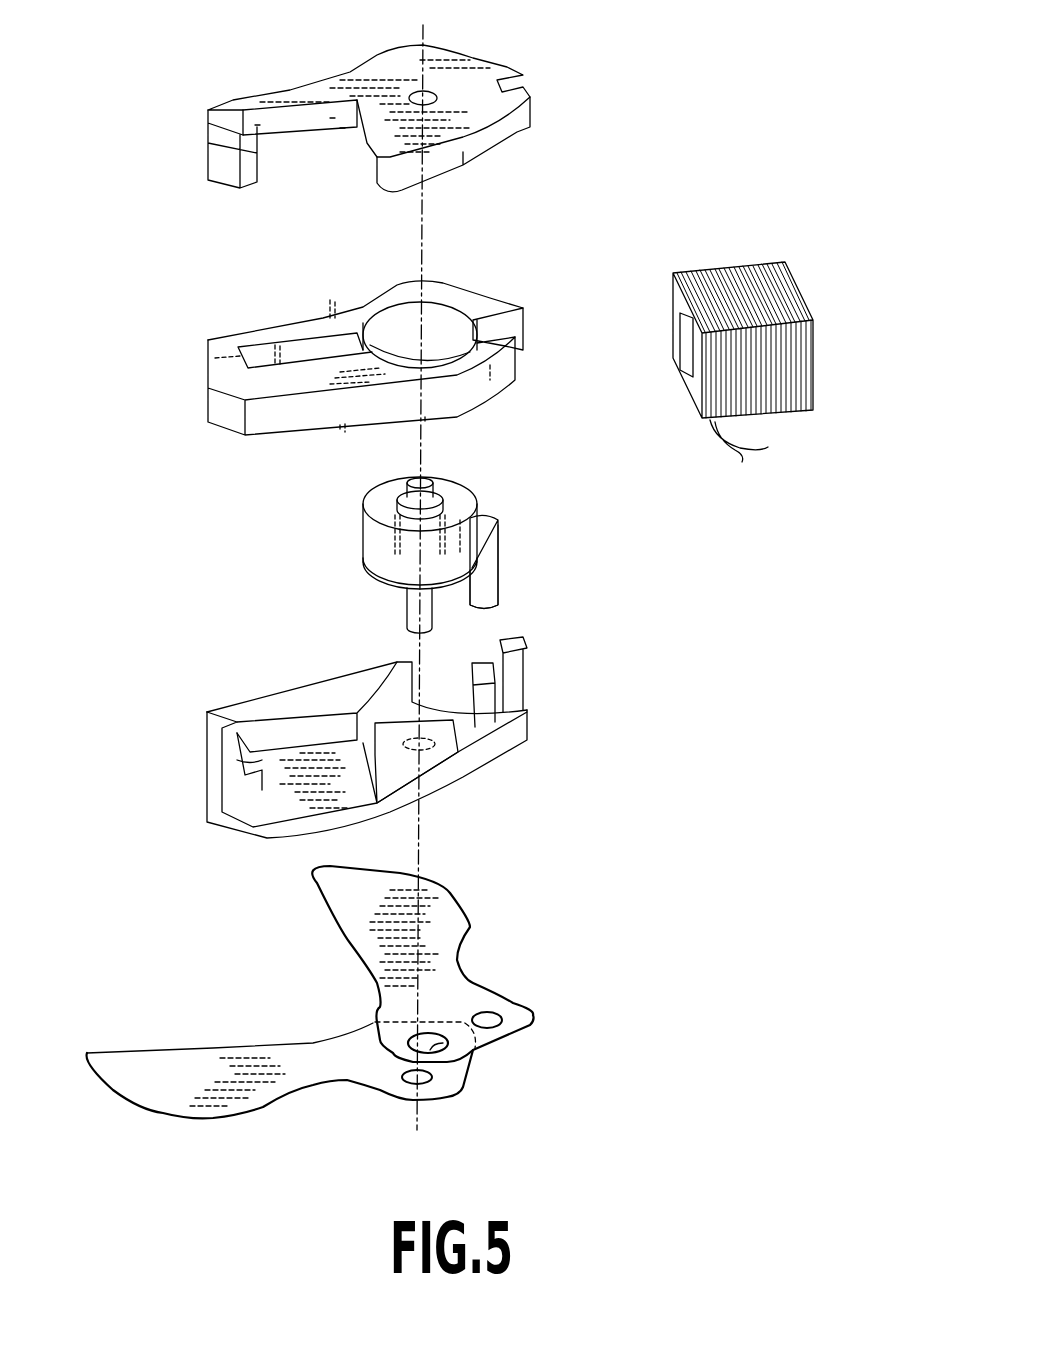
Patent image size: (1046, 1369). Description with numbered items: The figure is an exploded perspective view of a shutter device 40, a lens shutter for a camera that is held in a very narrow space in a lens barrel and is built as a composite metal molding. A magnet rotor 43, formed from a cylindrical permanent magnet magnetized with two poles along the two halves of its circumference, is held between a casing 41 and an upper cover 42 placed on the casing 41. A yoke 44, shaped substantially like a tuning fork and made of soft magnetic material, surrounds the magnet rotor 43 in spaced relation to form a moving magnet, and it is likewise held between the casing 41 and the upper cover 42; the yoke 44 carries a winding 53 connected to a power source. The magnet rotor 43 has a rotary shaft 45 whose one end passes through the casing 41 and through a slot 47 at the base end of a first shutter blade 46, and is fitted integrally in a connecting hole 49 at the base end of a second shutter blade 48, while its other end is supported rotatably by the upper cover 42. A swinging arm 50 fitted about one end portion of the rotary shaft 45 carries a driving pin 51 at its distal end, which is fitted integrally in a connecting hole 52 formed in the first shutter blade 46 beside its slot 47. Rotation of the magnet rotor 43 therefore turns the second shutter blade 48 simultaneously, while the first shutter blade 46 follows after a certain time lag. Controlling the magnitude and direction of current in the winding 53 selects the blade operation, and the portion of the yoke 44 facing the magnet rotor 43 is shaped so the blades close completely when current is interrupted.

The shutter device 40 is at (624, 104).
The casing 41 is at (308, 807).
The upper cover 42 is at (383, 77).
The magnet rotor 43 is at (370, 535).
The yoke 44 is at (327, 322).
The rotary shaft 45 is at (413, 610).
The first shutter blade 46 is at (460, 905).
The slot 47 is at (453, 1043).
The second shutter blade 48 is at (232, 1062).
The connecting hole 49 is at (407, 1085).
The swinging arm 50 is at (493, 517).
The driving pin 51 is at (497, 577).
The connecting hole 52 is at (517, 1003).
The winding 53 is at (722, 273).